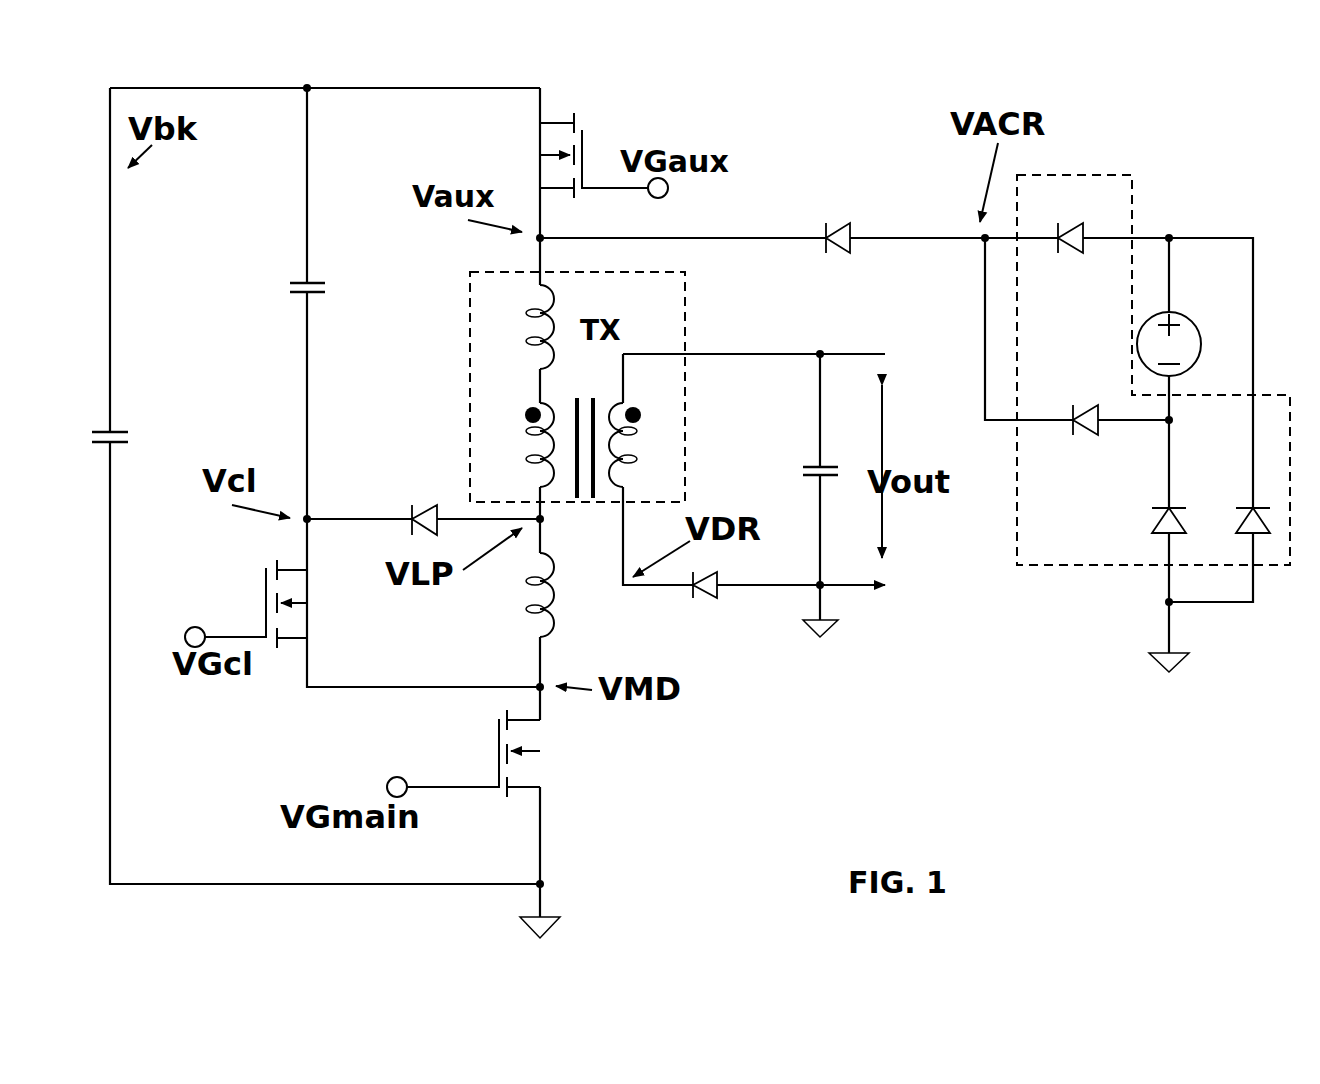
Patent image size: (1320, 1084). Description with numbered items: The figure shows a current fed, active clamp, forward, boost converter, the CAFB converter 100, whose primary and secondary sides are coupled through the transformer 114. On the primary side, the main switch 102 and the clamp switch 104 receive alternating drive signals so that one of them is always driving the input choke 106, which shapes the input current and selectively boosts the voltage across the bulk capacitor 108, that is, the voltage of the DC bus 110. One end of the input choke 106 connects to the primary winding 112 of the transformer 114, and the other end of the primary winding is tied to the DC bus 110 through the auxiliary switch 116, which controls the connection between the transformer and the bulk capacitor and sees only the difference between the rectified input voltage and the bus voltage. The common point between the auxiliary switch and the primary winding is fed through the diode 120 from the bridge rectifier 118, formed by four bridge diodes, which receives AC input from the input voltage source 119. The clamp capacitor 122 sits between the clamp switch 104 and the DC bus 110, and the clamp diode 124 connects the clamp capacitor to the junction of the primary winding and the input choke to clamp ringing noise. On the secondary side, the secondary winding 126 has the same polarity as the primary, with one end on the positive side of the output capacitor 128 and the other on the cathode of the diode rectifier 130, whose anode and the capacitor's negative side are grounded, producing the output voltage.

The CAFB converter 100 is at (812, 130).
The main switch Mmain 102 is at (548, 767).
The clamp switch Mcl 104 is at (308, 612).
The input choke Lck 106 is at (556, 618).
The bulk capacitor Cbk 108 is at (122, 446).
The DC bus 110 is at (270, 90).
The primary winding Lp 112 is at (523, 432).
The transformer TX 114 is at (688, 318).
The auxiliary switch Maux 116 is at (582, 130).
The bridge rectifier 118 is at (1117, 175).
The input voltage source 119 is at (1210, 343).
The diode DL 120 is at (850, 255).
The clamp capacitor Ccl 122 is at (320, 294).
The clamp diode Dcl 124 is at (420, 487).
The secondary winding Ls 126 is at (637, 431).
The output capacitor Co 128 is at (812, 466).
The diode rectifier DR 130 is at (715, 600).